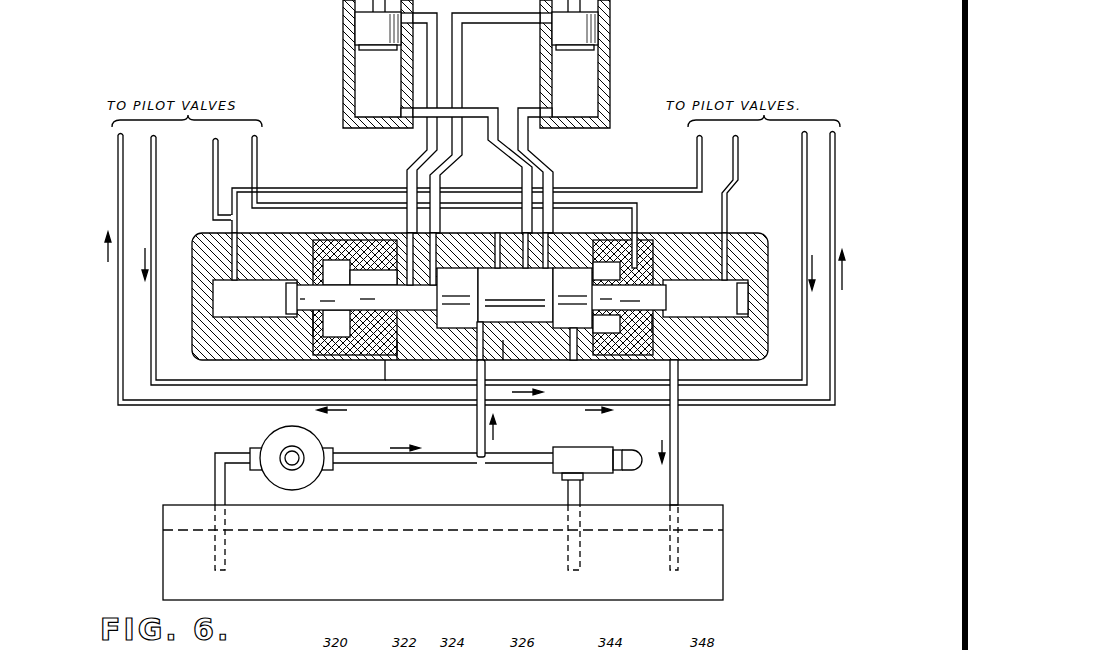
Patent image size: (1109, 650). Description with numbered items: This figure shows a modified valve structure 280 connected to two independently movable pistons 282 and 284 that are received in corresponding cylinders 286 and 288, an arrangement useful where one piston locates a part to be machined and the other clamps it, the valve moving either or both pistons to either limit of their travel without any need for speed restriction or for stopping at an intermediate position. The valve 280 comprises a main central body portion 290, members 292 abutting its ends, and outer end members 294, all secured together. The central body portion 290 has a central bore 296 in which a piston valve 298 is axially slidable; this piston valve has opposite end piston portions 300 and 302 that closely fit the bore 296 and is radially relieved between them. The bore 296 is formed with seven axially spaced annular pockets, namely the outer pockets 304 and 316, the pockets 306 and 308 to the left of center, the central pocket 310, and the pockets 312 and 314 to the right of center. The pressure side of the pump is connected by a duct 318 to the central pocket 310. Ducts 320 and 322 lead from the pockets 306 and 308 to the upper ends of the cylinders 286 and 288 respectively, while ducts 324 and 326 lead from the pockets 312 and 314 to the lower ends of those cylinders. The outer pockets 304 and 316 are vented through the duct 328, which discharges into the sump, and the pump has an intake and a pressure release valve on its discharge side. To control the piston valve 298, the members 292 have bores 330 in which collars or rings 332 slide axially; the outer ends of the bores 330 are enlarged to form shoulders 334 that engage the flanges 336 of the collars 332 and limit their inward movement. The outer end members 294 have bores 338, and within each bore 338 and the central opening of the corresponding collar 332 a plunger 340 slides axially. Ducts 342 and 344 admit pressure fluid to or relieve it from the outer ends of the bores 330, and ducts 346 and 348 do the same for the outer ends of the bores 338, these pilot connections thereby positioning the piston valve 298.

The piston 282 is at (378, 25).
The piston 284 is at (575, 25).
The cylinder 286 is at (354, 64).
The cylinder 288 is at (593, 64).
The duct 320 is at (420, 152).
The duct 322 is at (444, 165).
The duct 324 is at (522, 176).
The duct 326 is at (550, 170).
The duct 342 is at (213, 160).
The duct 344 is at (257, 160).
The duct 346 is at (697, 158).
The duct 348 is at (738, 153).
The valve structure 280 is at (471, 293).
The outer end member 294 is at (473, 293).
The member 292 is at (363, 223).
The annular groove or pocket 304 is at (370, 260).
The central pocket 310 is at (463, 235).
The main central body portion 290 is at (480, 237).
The central bore 296 is at (497, 240).
The annular groove or pocket 316 is at (568, 234).
The flange 336 is at (367, 289).
The collar or ring 332 is at (365, 294).
The plunger 340 is at (290, 288).
The bore 338 is at (293, 305).
The bore 330 is at (363, 365).
The shoulder 334 is at (330, 357).
The end piston portion 300 is at (457, 298).
The piston valve 298 is at (515, 295).
The end piston portion 302 is at (572, 298).
The annular groove or pocket 306 is at (397, 357).
The annular groove or pocket 308 is at (441, 353).
The annular groove or pocket 312 is at (503, 353).
The annular groove or pocket 314 is at (530, 355).
The duct 318 is at (477, 430).
The duct 328 is at (678, 440).